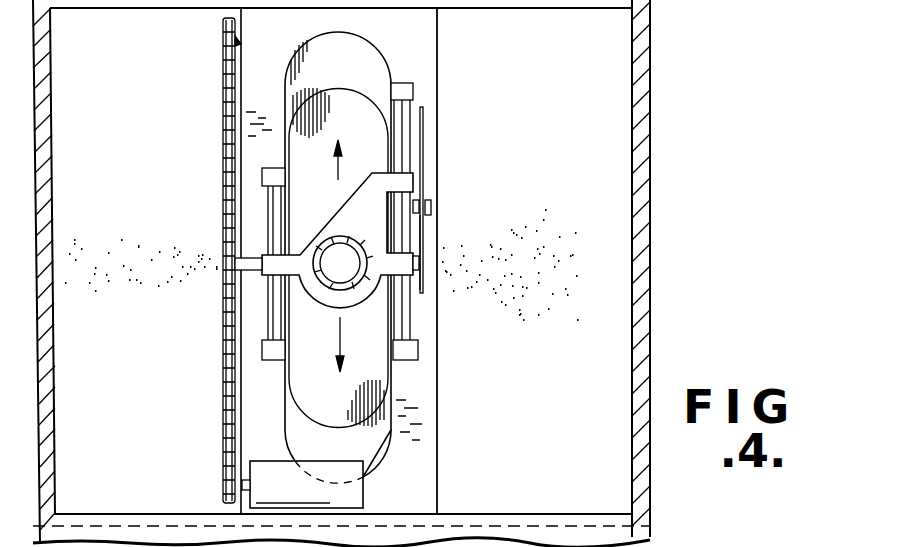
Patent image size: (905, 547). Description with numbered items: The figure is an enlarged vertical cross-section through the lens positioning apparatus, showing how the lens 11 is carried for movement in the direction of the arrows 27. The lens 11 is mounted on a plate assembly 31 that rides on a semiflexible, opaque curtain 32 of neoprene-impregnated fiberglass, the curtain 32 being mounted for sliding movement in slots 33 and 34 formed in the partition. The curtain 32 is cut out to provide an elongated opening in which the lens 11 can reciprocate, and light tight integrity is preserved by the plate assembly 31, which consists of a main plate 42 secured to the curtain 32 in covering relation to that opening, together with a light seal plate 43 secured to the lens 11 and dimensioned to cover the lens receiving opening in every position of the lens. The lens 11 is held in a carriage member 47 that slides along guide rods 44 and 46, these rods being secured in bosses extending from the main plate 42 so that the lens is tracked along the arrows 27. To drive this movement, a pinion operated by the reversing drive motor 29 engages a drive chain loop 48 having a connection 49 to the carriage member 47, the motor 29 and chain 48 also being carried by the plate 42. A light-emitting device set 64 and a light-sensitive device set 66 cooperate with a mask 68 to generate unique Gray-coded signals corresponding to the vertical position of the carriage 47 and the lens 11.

The lens 11 is at (343, 237).
The arrows 27 is at (337, 335).
The second reversing drive motor 29 is at (363, 492).
The plate assembly 31 is at (405, 72).
The curtain 32 is at (123, 204).
The slot 33 is at (522, 10).
The slot 34 is at (497, 512).
The main plate 42 is at (439, 407).
The light seal plate 43 is at (338, 422).
The guide rod 44 is at (272, 215).
The guide rod 46 is at (404, 137).
The carriage member 47 is at (353, 297).
The drive chain loop 48 is at (228, 387).
The connection 49 is at (247, 263).
The light-emitting device set 64 is at (416, 198).
The light-sensitive device set 66 is at (432, 207).
The mask 68 is at (424, 222).